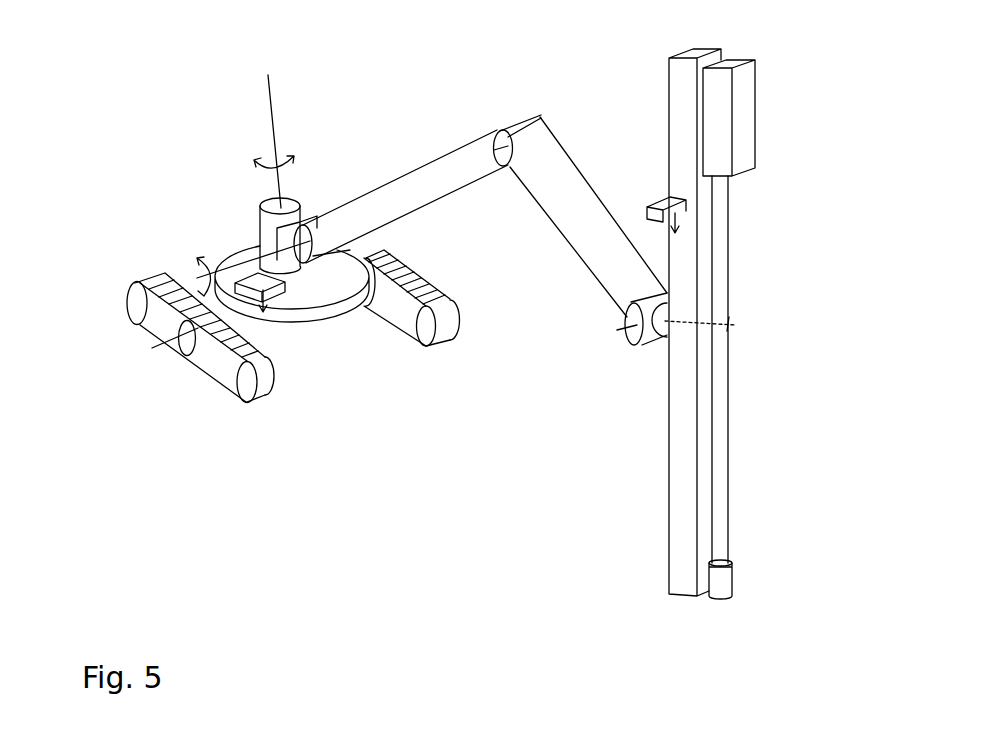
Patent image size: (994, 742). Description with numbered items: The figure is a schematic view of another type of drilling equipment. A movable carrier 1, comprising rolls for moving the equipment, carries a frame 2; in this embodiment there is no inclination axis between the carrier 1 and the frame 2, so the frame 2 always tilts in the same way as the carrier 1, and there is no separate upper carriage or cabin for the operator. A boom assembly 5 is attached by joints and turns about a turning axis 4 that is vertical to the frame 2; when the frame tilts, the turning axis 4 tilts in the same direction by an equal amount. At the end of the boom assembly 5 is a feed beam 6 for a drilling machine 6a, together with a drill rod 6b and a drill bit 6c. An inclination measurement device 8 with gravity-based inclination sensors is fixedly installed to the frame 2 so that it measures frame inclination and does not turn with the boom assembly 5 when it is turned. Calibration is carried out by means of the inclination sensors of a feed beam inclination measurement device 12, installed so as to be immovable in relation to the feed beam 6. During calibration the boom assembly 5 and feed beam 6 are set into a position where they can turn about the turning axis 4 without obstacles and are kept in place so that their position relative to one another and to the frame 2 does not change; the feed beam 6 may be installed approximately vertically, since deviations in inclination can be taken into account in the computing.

The movable carrier 1 is at (136, 333).
The frame 2 is at (282, 323).
The turning axis 4 is at (273, 143).
The boom assembly 5 is at (420, 136).
The feed beam 6 is at (670, 127).
The drilling machine 6a is at (742, 123).
The drill rod 6b is at (720, 477).
The drill bit 6c is at (723, 588).
The inclination measurement device 8 is at (292, 295).
The feed beam inclination measurement device 12 is at (695, 212).